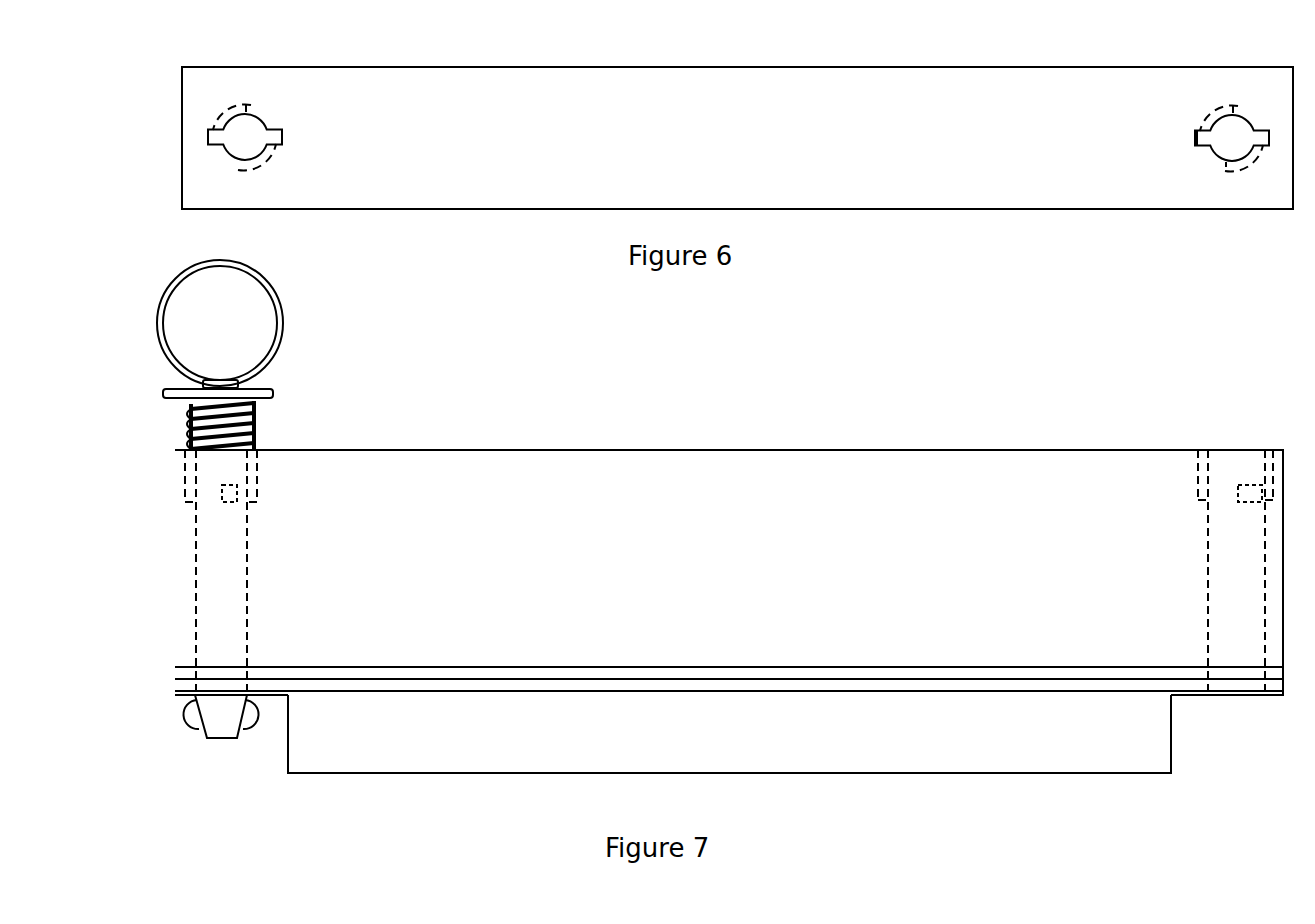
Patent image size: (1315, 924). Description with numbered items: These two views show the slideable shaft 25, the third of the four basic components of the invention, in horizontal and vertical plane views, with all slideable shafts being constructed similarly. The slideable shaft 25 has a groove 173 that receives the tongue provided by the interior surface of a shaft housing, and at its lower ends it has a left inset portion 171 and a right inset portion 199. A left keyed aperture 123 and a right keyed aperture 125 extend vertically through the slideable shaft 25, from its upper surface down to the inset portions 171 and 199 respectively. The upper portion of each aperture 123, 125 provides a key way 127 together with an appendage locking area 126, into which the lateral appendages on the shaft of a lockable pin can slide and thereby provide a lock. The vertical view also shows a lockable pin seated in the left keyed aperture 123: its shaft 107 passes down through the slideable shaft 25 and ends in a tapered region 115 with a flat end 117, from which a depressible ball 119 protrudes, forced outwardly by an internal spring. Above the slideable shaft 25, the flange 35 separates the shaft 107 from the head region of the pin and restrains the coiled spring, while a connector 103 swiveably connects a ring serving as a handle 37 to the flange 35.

In FIG. 6, the slideable shaft 25 is at (729, 143).
In FIG. 7, the slideable shaft 25 is at (718, 558).
In FIG. 7, the ring handle 37 is at (283, 325).
In FIG. 7, the connector 103 is at (238, 384).
In FIG. 7, the flange 35 is at (275, 396).
In FIG. 7, the shaft 107 is at (196, 538).
In FIG. 6, the left keyed aperture 123 is at (270, 126).
In FIG. 7, the left keyed aperture 123 is at (196, 588).
In FIG. 6, the right keyed aperture 125 is at (1252, 116).
In FIG. 7, the right keyed aperture 125 is at (1206, 561).
In FIG. 6, the appendage locking area 126 is at (1229, 178).
In FIG. 7, the appendage locking area 126 is at (1248, 485).
In FIG. 6, the key way 127 is at (1197, 146).
In FIG. 7, the key way 127 is at (1197, 455).
In FIG. 7, the tapered region 115 is at (235, 722).
In FIG. 7, the flat end 117 is at (218, 741).
In FIG. 7, the depressible ball 119 is at (193, 723).
In FIG. 7, the left inset portion 171 is at (282, 747).
In FIG. 7, the groove 173 is at (1138, 680).
In FIG. 7, the right inset portion 199 is at (1187, 748).